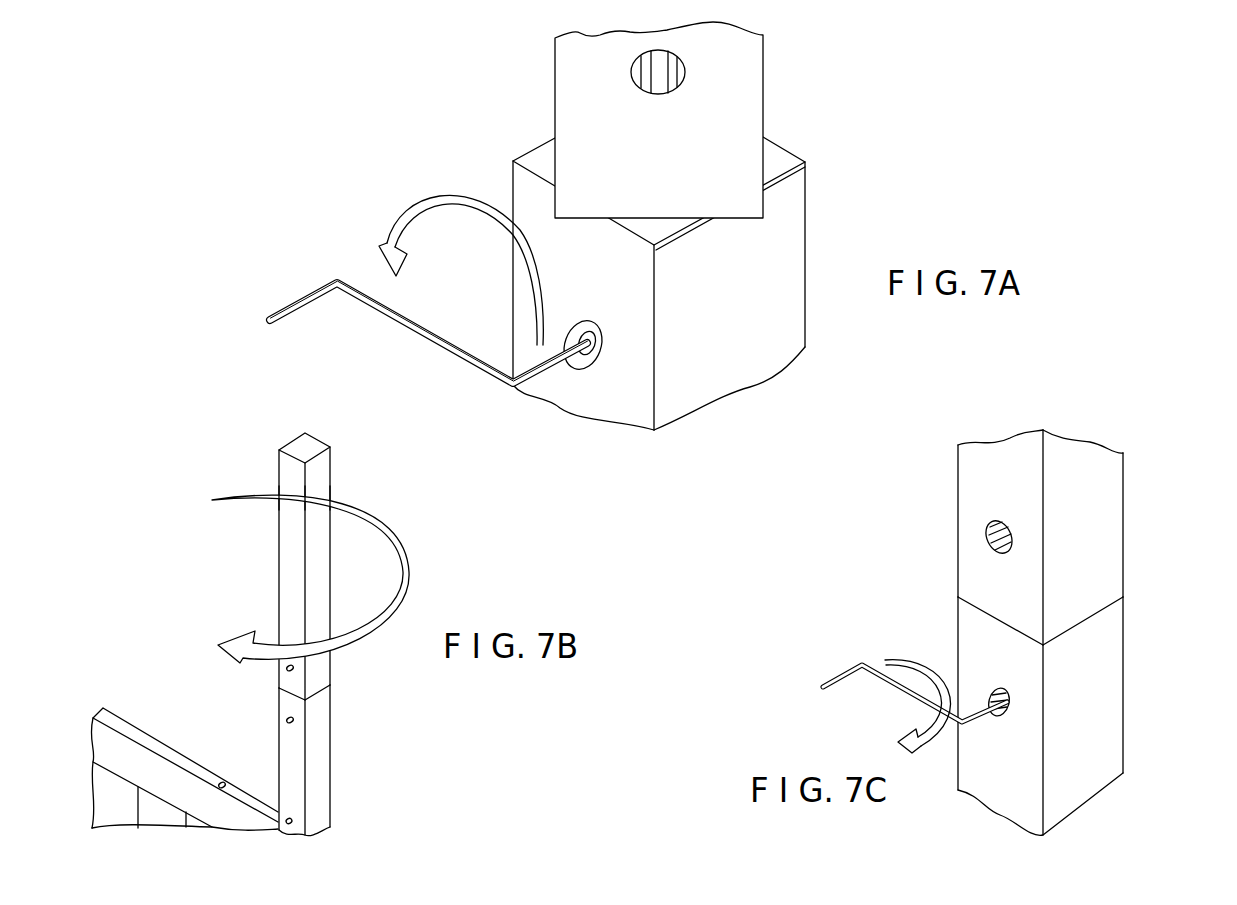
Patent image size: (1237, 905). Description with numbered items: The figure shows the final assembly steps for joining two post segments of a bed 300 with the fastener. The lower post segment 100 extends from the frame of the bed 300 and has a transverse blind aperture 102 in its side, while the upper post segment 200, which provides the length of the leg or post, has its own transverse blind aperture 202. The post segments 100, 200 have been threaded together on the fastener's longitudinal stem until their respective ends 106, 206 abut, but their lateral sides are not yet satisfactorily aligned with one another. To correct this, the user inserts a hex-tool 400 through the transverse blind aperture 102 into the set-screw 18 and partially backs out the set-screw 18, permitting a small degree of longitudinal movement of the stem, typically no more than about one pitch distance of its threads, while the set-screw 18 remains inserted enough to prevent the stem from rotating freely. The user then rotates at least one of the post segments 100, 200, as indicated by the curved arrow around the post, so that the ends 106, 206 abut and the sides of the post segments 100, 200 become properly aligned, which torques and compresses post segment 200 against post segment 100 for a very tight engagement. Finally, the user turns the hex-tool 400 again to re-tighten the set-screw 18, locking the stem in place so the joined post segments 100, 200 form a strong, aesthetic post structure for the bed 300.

In FIG. 7A, the post segment 100 is at (780, 250).
In FIG. 7B, the post segment 100 is at (318, 727).
In FIG. 7C, the post segment 100 is at (1097, 692).
In FIG. 7A, the transverse blind aperture 102 is at (603, 367).
In FIG. 7B, the transverse blind aperture 102 is at (283, 723).
In FIG. 7C, the transverse blind aperture 102 is at (1007, 715).
In FIG. 7A, the end 106 is at (777, 163).
In FIG. 7A, the set-screw 18 is at (580, 320).
In FIG. 7A, the post segment 200 is at (743, 82).
In FIG. 7B, the post segment 200 is at (318, 477).
In FIG. 7C, the post segment 200 is at (1097, 523).
In FIG. 7A, the transverse blind aperture 202 is at (638, 70).
In FIG. 7B, the transverse blind aperture 202 is at (283, 670).
In FIG. 7C, the transverse blind aperture 202 is at (993, 545).
In FIG. 7A, the end 206 is at (582, 220).
In FIG. 7B, the bed 300 is at (128, 712).
In FIG. 7A, the hex-tool 400 is at (312, 282).
In FIG. 7C, the hex-tool 400 is at (837, 660).